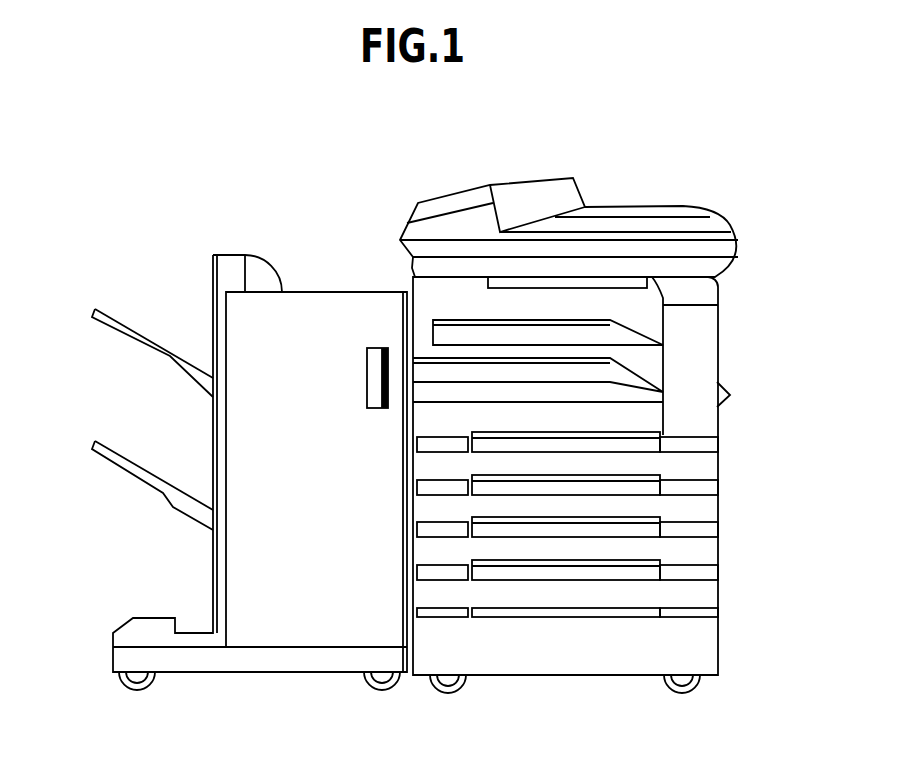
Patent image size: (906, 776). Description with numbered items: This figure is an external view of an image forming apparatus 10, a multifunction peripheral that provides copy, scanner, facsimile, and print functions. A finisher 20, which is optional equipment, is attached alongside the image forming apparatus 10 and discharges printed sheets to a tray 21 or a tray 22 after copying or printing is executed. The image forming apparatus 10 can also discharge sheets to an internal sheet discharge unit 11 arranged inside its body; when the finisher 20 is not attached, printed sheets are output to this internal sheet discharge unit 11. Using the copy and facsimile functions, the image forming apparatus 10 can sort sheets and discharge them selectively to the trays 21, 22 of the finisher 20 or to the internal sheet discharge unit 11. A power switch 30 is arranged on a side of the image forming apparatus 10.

The image forming apparatus 10 is at (595, 400).
The internal sheet discharge unit 11 is at (458, 333).
The finisher 20 is at (335, 292).
The tray 21 is at (93, 311).
The tray 22 is at (92, 444).
The power switch 30 is at (730, 395).